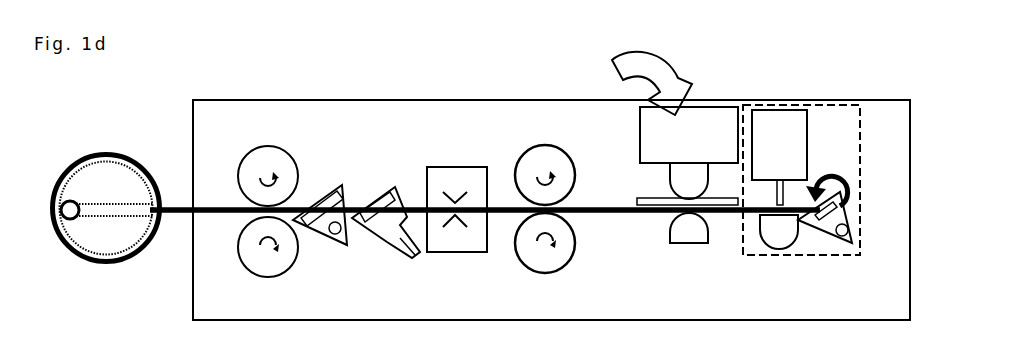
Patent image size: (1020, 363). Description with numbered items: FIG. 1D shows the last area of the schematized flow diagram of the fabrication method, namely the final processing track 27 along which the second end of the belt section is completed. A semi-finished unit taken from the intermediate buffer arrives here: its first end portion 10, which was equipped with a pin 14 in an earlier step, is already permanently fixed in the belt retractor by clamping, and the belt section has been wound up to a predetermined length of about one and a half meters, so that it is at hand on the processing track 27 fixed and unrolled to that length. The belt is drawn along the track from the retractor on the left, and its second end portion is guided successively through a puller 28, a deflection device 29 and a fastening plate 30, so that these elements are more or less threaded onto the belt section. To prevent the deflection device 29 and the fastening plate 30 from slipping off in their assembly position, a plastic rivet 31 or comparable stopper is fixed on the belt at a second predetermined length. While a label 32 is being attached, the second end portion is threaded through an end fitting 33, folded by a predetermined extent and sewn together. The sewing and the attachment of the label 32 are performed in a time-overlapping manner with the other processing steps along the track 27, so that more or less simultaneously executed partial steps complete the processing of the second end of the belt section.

The first end portion 10 is at (85, 225).
The pin 14 is at (60, 226).
The final processing track 27 is at (867, 112).
The puller 28 is at (273, 277).
The deflection device 29 is at (325, 237).
The fastening plate 30 is at (397, 243).
The plastic rivet 31 is at (455, 222).
The label 32 is at (642, 197).
The end fitting 33 is at (847, 245).